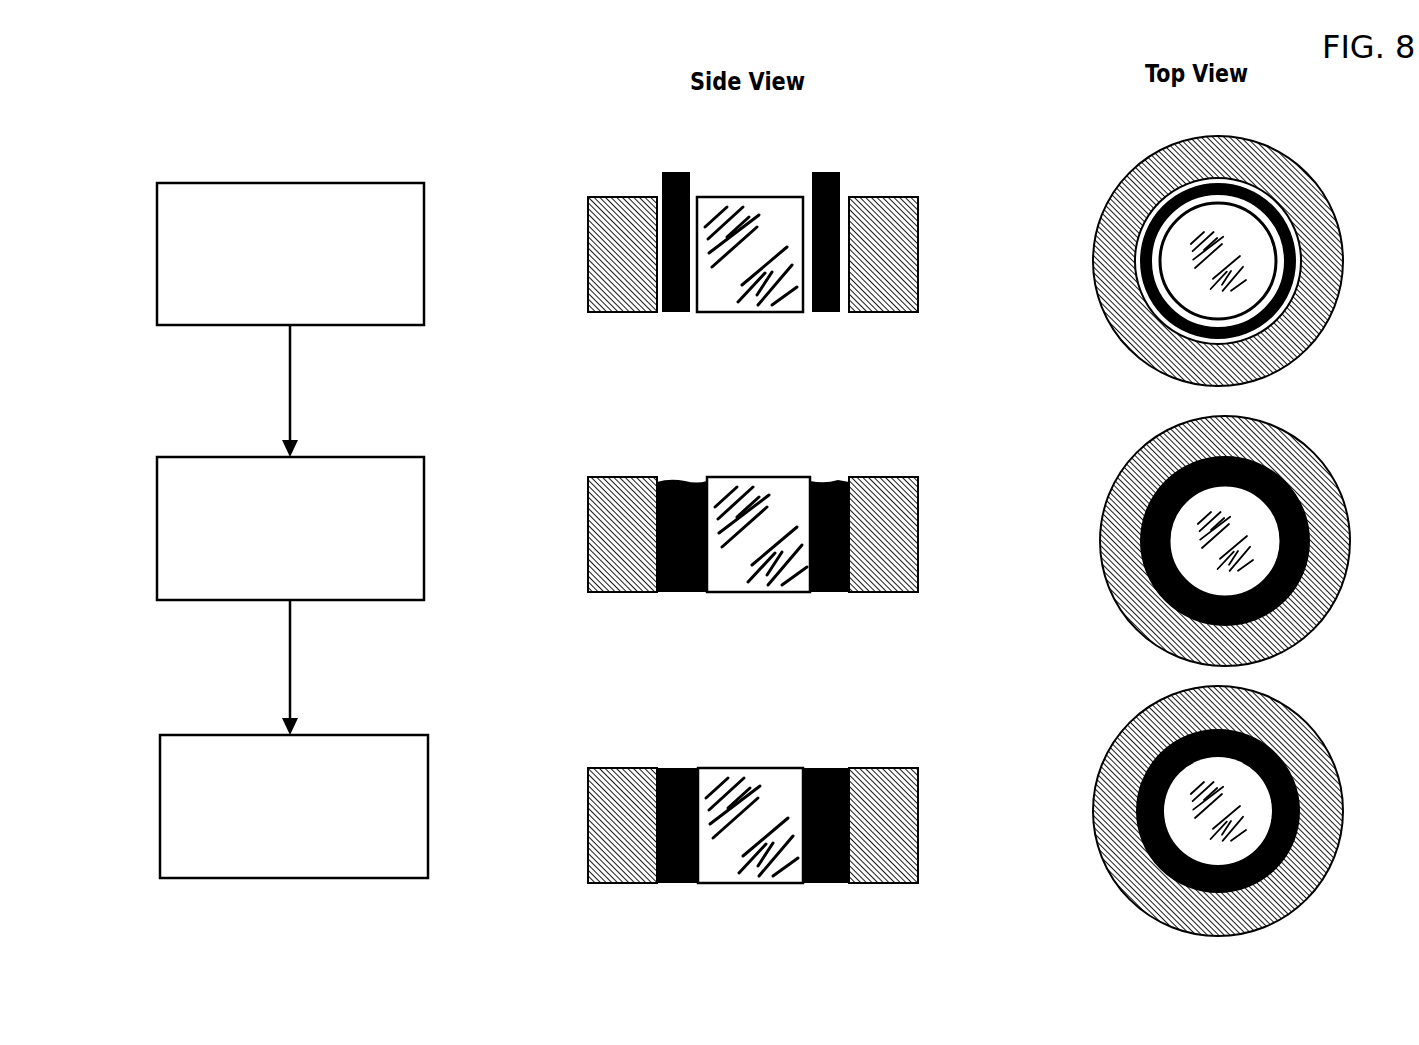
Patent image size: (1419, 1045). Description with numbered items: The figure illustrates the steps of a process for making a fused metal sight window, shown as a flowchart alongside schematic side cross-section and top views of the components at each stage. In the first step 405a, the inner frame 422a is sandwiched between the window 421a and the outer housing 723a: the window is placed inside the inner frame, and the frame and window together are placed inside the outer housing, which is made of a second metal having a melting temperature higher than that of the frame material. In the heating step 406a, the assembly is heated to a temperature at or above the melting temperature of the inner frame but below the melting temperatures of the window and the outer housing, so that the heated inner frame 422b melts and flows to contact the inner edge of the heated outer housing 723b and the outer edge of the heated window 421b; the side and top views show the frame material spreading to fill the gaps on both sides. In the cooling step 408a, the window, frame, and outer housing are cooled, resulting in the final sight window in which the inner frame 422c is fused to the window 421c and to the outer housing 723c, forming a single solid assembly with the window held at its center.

The assembly step 405a is at (157, 263).
The heating step 406a is at (157, 536).
The cooling step 408a is at (160, 816).
The outer housing 723a is at (605, 197).
The heated outer housing 723b is at (605, 477).
The outer housing 723c is at (607, 768).
The inner frame 422a is at (681, 172).
The heated inner frame 422b is at (685, 480).
The inner frame 422c is at (685, 768).
The window 421a is at (758, 197).
The heated window 421b is at (768, 477).
The window 421c is at (768, 768).